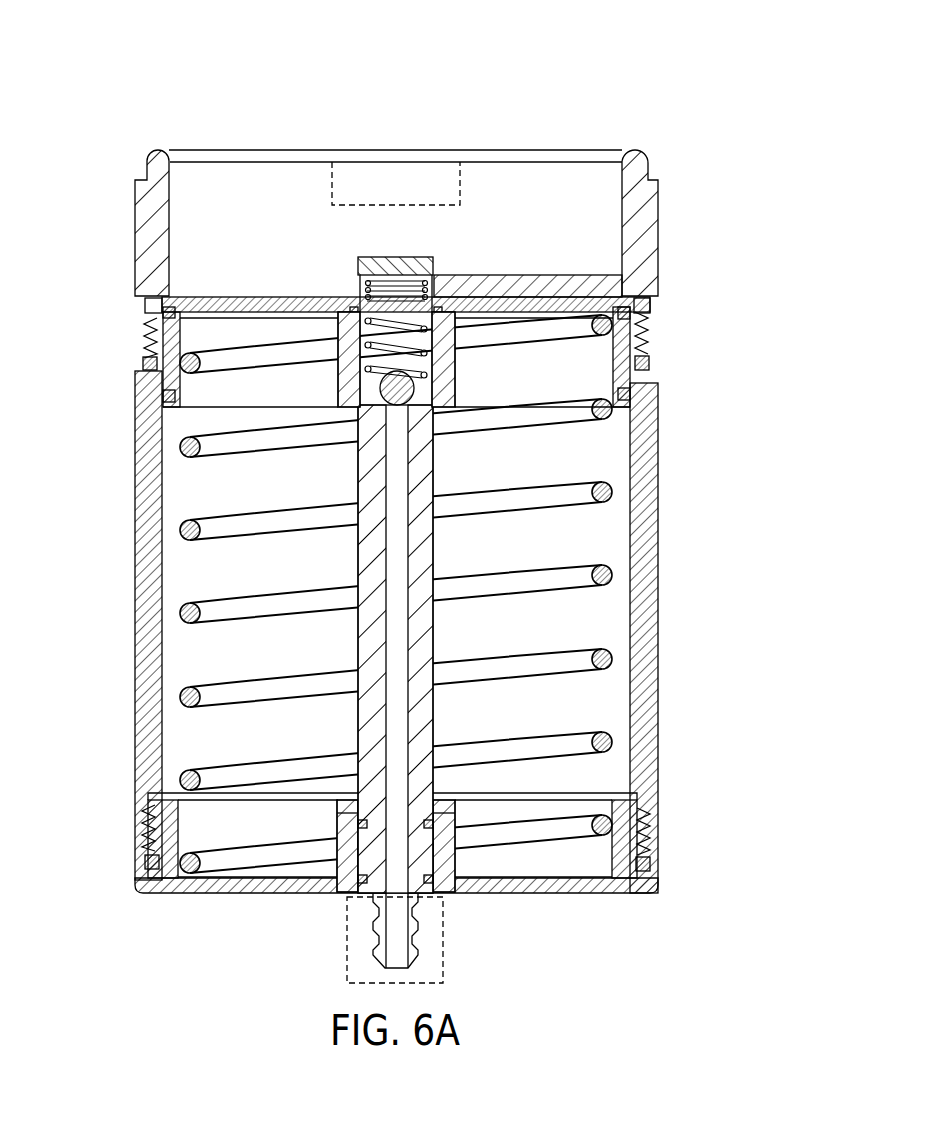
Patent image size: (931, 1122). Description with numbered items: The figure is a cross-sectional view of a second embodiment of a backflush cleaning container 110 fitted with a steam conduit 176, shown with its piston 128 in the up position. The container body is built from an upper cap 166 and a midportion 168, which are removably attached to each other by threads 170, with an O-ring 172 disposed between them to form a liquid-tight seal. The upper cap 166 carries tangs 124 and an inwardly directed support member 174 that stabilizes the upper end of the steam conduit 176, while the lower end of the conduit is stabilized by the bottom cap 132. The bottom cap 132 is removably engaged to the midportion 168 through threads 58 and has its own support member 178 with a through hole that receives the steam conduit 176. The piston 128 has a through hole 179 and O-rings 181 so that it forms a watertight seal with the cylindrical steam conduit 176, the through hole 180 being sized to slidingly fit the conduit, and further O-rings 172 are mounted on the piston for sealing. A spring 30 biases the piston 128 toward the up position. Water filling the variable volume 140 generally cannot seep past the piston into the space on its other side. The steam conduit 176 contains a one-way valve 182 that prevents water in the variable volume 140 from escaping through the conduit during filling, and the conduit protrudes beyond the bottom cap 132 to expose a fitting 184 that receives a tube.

The backflush cleaning container 110 is at (692, 96).
The variable volume 140 is at (547, 166).
The tangs 124 is at (330, 178).
The inwardly directed support member 174 is at (543, 274).
The upper cap 166 is at (102, 150).
The midportion 168 is at (102, 372).
The piston 128 is at (705, 295).
The threads 170 is at (650, 340).
The O-ring 172 is at (340, 316).
The through hole 180 is at (432, 356).
The one-way valve 182 is at (410, 402).
The steam conduit 176 is at (355, 572).
The spring 30 is at (545, 582).
The O-rings 181 is at (357, 818).
The through hole 179 is at (345, 850).
The support member 178 is at (440, 858).
The fitting 184 is at (347, 928).
The threads 58 is at (646, 840).
The bottom cap 132 is at (705, 800).